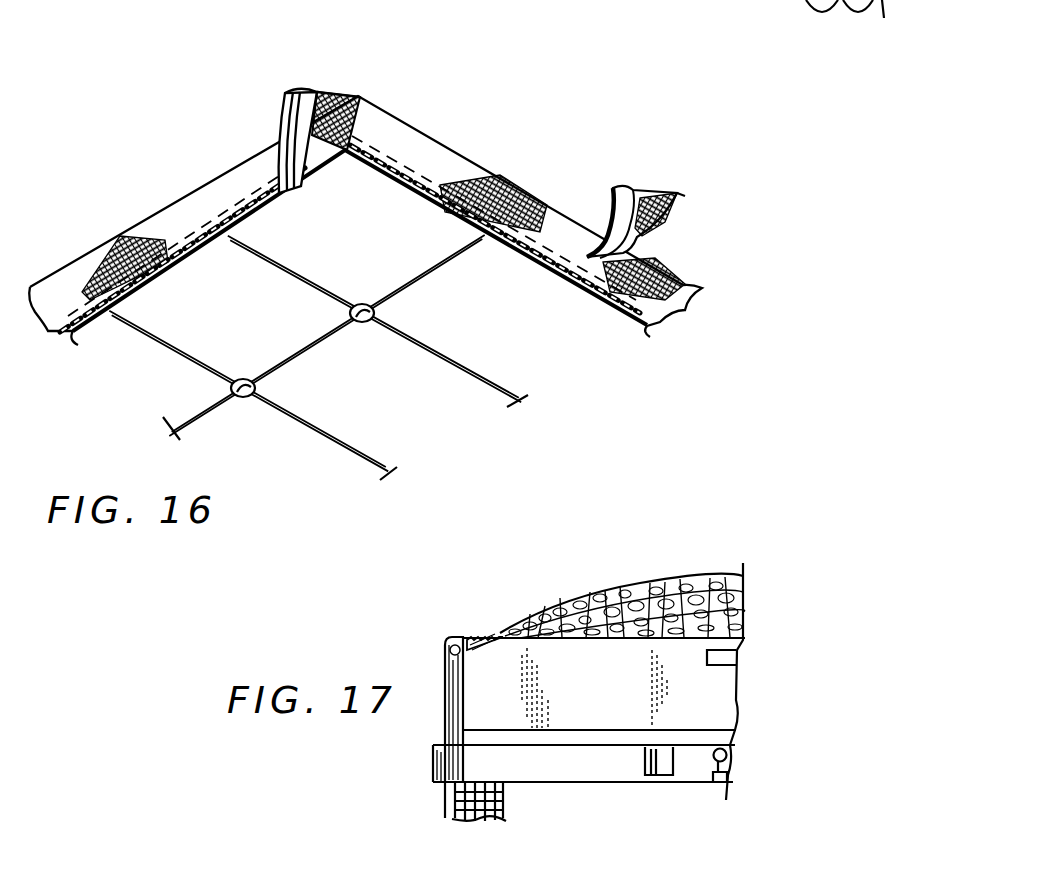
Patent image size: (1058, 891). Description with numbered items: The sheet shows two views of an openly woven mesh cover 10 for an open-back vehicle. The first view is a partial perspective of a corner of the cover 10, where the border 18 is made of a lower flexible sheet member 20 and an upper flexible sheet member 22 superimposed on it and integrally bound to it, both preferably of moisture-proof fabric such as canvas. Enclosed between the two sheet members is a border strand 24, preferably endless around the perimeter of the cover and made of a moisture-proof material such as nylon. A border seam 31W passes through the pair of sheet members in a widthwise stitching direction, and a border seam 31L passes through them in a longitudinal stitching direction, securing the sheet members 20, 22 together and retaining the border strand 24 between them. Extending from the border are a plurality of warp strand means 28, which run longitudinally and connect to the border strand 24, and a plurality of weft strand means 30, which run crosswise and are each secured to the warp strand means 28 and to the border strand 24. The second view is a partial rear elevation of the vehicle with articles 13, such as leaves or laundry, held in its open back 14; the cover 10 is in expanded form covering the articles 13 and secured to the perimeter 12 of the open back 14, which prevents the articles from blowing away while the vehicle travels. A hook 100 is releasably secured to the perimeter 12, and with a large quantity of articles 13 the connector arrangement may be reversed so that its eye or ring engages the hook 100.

In FIG. 16, the border 18 is at (366, 178).
In FIG. 16, the border seam 31L is at (170, 267).
In FIG. 16, the border seam 31W is at (460, 187).
In FIG. 16, the upper flexible sheet member 22 is at (657, 197).
In FIG. 16, the lower flexible sheet member 20 is at (680, 281).
In FIG. 16, the border strand 24 is at (655, 305).
In FIG. 16, the warp strand means 28 is at (393, 292).
In FIG. 16, the weft strand means 30 is at (430, 365).
In FIG. 17, the openly woven mesh cover 10 is at (616, 583).
In FIG. 17, the articles 13 is at (700, 577).
In FIG. 17, the perimeter 12 is at (466, 635).
In FIG. 17, the hook 100 is at (498, 641).
In FIG. 17, the open back 14 is at (611, 692).